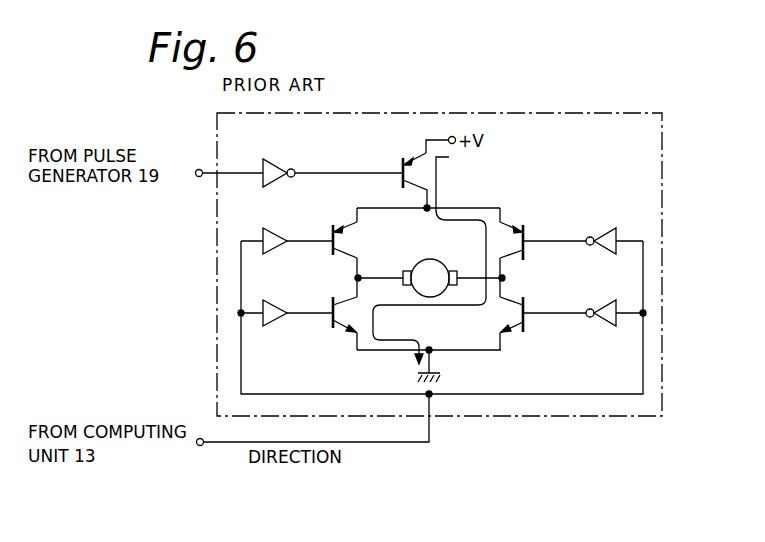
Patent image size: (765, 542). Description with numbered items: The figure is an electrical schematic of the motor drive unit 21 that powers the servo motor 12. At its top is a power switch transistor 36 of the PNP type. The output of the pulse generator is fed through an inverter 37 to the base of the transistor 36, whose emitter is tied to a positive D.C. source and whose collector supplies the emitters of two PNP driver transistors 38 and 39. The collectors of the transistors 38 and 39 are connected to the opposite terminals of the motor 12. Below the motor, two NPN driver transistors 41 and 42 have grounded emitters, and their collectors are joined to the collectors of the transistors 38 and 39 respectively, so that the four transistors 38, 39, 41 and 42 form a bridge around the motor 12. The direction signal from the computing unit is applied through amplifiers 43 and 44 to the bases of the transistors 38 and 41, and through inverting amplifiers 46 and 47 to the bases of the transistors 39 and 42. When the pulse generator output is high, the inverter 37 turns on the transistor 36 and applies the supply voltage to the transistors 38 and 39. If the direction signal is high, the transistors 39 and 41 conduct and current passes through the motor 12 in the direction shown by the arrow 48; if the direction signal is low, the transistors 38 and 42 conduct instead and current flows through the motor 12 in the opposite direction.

The motor drive unit 21 is at (510, 113).
The motor 12 is at (428, 260).
The power switch transistor 36 is at (403, 165).
The inverter 37 is at (272, 159).
The PNP driver transistor 38 is at (333, 226).
The PNP driver transistor 39 is at (523, 226).
The NPN driver transistor 41 is at (333, 330).
The NPN driver transistor 42 is at (523, 332).
The amplifier 43 is at (262, 228).
The amplifier 44 is at (268, 327).
The inverting amplifier 46 is at (616, 228).
The inverting amplifier 47 is at (610, 326).
The arrow 48 is at (470, 220).